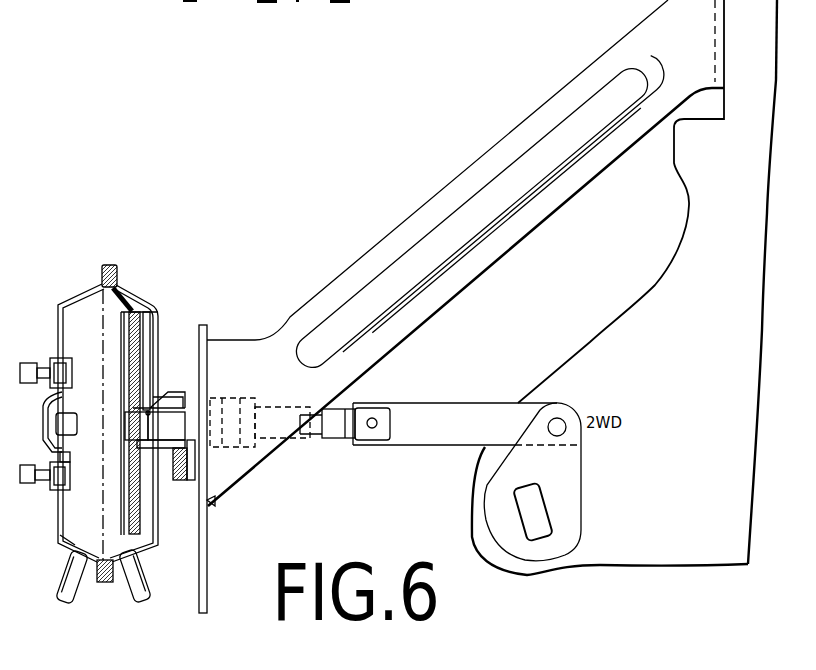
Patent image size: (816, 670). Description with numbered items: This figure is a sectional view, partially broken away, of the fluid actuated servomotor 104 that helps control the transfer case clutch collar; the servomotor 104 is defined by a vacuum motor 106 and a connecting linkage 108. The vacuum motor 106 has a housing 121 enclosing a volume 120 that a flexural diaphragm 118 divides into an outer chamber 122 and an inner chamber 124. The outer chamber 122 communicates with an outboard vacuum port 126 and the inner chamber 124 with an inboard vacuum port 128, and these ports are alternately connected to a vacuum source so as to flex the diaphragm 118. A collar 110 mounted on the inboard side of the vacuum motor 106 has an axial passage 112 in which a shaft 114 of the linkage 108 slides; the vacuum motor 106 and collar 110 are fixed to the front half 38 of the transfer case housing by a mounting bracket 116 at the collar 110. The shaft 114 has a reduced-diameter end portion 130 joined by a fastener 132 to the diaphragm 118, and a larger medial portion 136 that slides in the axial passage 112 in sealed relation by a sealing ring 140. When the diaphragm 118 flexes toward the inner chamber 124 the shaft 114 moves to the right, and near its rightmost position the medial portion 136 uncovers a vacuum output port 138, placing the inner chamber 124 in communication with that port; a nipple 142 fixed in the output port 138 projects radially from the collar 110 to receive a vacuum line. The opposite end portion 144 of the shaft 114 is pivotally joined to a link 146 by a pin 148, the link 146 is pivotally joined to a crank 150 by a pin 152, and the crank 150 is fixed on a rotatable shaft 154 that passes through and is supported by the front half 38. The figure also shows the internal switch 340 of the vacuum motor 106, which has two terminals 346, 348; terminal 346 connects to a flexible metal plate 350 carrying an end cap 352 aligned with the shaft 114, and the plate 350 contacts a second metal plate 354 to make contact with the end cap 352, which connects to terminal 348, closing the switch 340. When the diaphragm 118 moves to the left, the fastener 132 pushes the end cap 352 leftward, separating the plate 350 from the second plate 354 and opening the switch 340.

The front half of the housing 38 is at (733, 337).
The fluid actuated servomotor 104 is at (146, 407).
The vacuum motor 106 is at (91, 274).
The connecting linkage 108 is at (451, 406).
The collar 110 is at (165, 396).
The axial passage 112 is at (160, 395).
The shaft 114 is at (198, 438).
The mounting bracket 116 is at (505, 134).
The flexural diaphragm 118 is at (124, 288).
The volume 120 is at (97, 334).
The housing 121 is at (110, 282).
The outer chamber 122 is at (60, 533).
The inner chamber 124 is at (152, 299).
The outboard vacuum port 126 is at (74, 590).
The inboard vacuum port 128 is at (148, 582).
The end portion 130 is at (128, 488).
The fastener 132 is at (127, 414).
The medial portion 136 is at (187, 418).
The vacuum output port 138 is at (180, 480).
The sealing ring 140 is at (160, 406).
The nipple 142 is at (195, 474).
The opposite end portion 144 is at (362, 438).
The link 146 is at (495, 410).
The pin 148 is at (374, 418).
The crank 150 is at (562, 489).
The pin 152 is at (559, 418).
The rotatable shaft 154 is at (541, 530).
The switch 340 is at (52, 553).
The terminal 346 is at (26, 362).
The terminal 348 is at (25, 483).
The flexible metal plate 350 is at (67, 396).
The end cap 352 is at (68, 432).
The second metal plate 354 is at (70, 458).